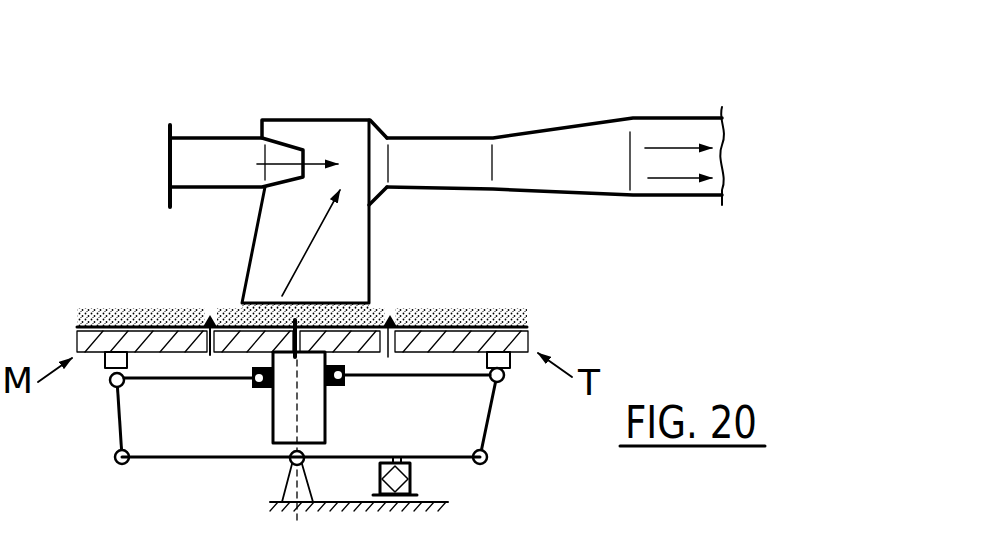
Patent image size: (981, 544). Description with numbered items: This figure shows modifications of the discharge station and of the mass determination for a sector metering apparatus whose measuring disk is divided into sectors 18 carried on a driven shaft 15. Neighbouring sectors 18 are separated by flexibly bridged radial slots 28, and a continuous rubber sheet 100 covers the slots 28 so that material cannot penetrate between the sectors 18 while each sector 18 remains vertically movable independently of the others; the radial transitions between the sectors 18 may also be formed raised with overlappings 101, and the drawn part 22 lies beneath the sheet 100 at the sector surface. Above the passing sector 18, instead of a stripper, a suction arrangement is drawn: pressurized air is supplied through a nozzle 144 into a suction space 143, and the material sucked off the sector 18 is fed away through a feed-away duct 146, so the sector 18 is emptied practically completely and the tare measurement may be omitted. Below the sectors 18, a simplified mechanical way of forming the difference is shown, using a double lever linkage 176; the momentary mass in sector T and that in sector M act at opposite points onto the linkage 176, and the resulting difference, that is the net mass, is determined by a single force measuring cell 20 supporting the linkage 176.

The nozzle 144 is at (245, 150).
The suction space 143 is at (349, 223).
The feed-away duct 146 is at (588, 142).
The overlappings 101 is at (210, 306).
The bed support line 22 is at (392, 308).
The continuous rubber sheet 100 is at (530, 328).
The sectors 18 is at (122, 347).
The radial slots 28 is at (208, 347).
The shaft 15 is at (272, 430).
The double lever linkage 176 is at (158, 460).
The load cell 20 is at (415, 482).